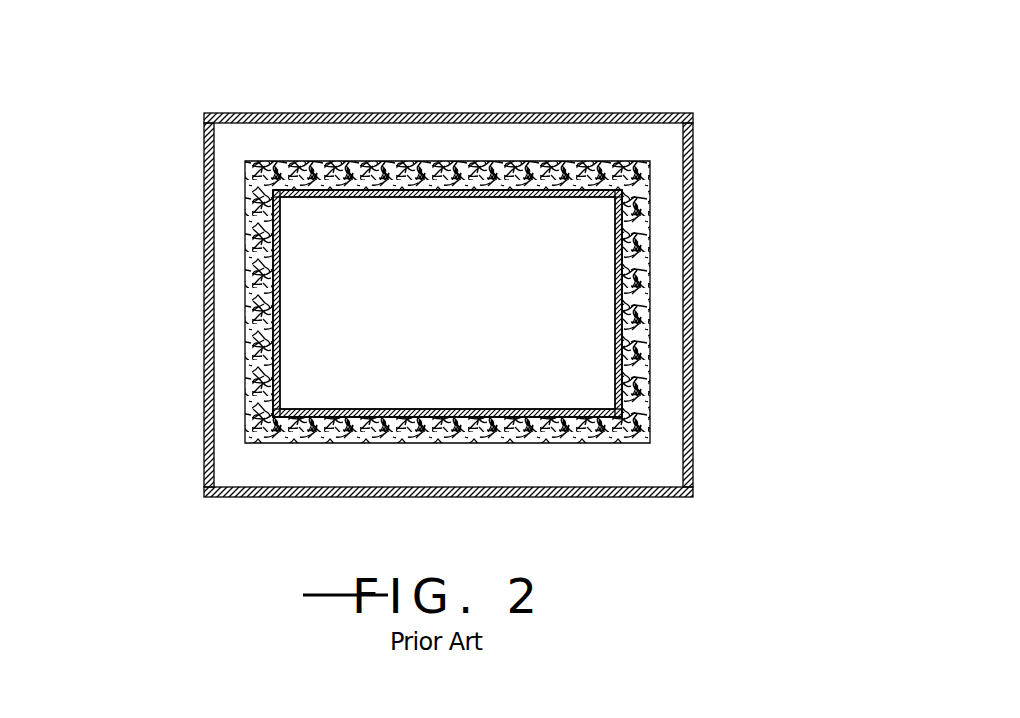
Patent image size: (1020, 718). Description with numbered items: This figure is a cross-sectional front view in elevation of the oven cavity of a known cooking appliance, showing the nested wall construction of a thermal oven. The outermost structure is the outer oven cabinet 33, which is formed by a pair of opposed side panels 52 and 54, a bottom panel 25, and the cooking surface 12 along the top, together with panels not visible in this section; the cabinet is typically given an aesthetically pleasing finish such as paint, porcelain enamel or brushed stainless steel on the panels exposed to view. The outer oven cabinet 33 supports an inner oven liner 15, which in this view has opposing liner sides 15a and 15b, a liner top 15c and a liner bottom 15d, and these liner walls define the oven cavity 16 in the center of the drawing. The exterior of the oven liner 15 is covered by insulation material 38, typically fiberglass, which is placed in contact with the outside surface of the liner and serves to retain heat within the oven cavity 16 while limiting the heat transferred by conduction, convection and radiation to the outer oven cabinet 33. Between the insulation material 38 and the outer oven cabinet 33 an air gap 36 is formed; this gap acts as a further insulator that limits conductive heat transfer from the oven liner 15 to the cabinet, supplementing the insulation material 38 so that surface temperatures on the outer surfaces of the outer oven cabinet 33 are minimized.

The cooking surface 12 is at (440, 113).
The outer oven cabinet 33 is at (696, 148).
The side panel 52 is at (205, 299).
The side panel 54 is at (693, 295).
The bottom panel 25 is at (568, 497).
The air gap 36 is at (563, 142).
The insulation material 38 is at (303, 168).
The inner oven liner 15 is at (263, 244).
The liner side 15a is at (280, 346).
The liner side 15b is at (613, 298).
The liner top 15c is at (443, 199).
The liner bottom 15d is at (467, 409).
The oven cavity 16 is at (567, 385).